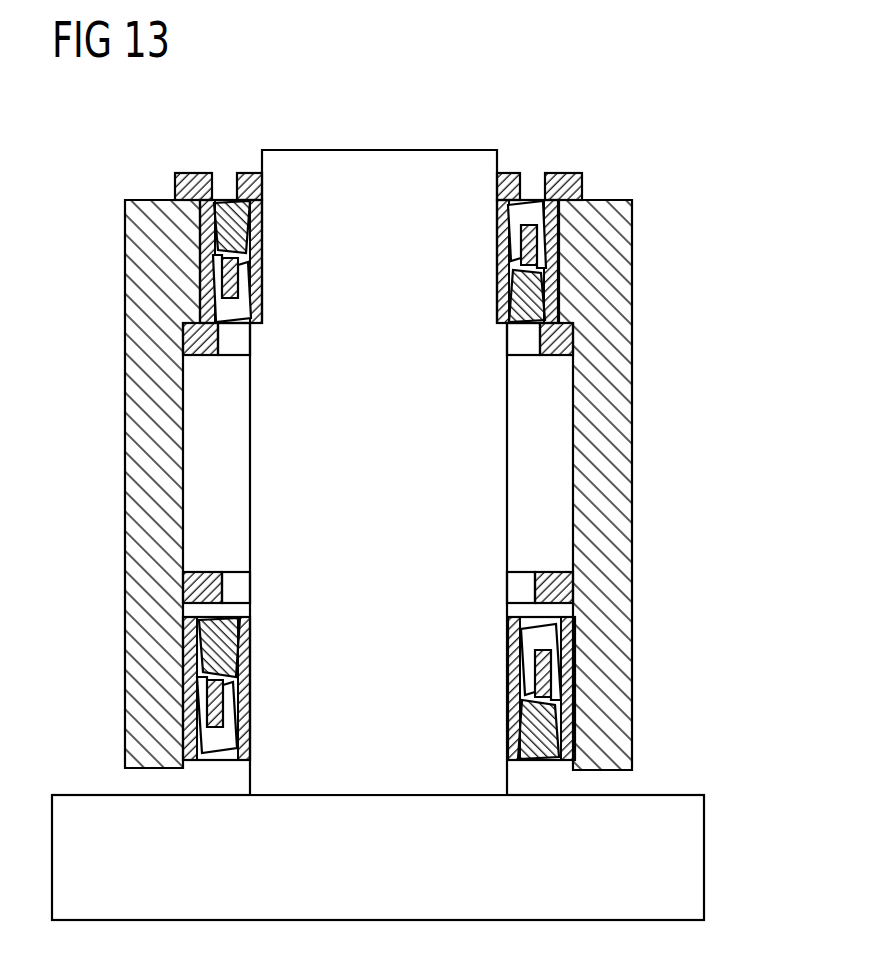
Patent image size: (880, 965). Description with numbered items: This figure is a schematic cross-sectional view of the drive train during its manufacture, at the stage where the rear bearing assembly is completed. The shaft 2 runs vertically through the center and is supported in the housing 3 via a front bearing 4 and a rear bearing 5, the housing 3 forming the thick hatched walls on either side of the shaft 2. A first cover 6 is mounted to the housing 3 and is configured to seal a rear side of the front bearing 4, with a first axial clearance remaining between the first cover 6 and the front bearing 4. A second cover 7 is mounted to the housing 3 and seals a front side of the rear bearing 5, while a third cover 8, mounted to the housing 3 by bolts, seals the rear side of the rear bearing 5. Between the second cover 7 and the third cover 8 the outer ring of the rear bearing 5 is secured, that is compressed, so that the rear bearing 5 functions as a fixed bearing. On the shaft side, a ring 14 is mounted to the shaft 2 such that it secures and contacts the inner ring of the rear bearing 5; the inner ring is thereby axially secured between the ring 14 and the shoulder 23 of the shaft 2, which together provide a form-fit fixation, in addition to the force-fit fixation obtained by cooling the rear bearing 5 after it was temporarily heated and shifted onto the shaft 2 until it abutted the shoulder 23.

The shaft 2 is at (383, 166).
The housing 3 is at (618, 457).
The front bearing 4 is at (196, 738).
The rear bearing 5 is at (197, 223).
The first cover 6 is at (560, 591).
The second cover 7 is at (560, 341).
The third cover 8 is at (566, 175).
The ring 14 is at (500, 175).
The shoulder 23 is at (258, 325).